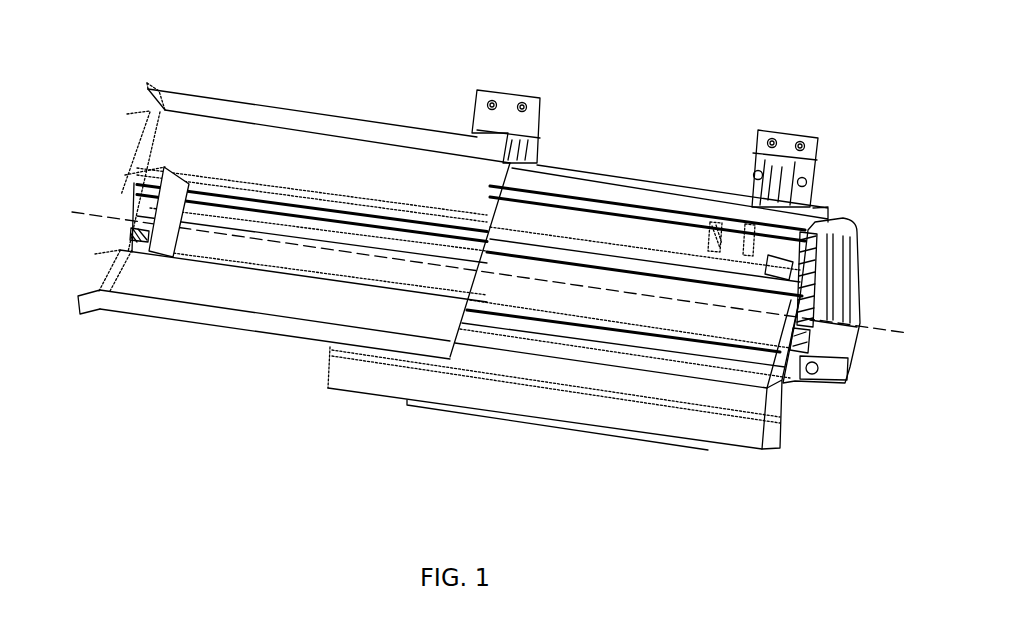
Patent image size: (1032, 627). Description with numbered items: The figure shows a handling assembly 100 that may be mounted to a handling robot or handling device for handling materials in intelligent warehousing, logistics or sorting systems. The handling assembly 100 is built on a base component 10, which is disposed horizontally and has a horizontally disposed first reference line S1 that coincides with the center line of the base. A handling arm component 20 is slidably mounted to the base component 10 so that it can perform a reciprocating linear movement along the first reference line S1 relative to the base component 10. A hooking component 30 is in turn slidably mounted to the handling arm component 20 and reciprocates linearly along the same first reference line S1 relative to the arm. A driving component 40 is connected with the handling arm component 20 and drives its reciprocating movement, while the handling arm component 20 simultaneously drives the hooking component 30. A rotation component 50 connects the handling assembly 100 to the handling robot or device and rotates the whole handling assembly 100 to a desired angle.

The handling assembly 100 is at (741, 70).
The base component 10 is at (591, 370).
The handling arm component 20 is at (378, 162).
The hooking component 30 is at (170, 203).
The driving component 40 is at (713, 242).
The rotation component 50 is at (822, 348).
The first reference line S1 is at (473, 262).